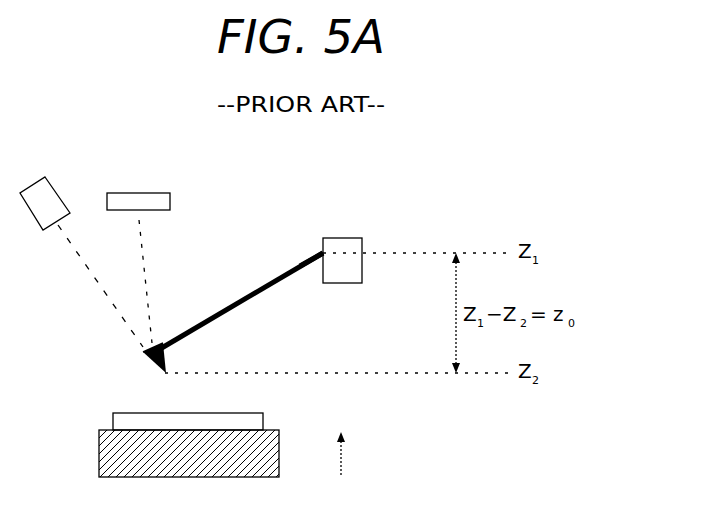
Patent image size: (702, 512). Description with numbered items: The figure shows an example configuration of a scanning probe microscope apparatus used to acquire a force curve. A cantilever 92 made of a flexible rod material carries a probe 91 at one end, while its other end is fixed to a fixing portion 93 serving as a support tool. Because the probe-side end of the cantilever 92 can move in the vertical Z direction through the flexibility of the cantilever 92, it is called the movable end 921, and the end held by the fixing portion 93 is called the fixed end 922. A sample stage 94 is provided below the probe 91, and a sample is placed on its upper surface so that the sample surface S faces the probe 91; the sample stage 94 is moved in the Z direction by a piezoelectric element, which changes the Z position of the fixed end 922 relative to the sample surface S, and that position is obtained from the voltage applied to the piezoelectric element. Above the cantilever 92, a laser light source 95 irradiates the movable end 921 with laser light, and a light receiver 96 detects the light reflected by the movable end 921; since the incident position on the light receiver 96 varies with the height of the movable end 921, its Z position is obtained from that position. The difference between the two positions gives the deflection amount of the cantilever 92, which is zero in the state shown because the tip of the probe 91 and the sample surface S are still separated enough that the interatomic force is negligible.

The probe 91 is at (148, 363).
The cantilever 92 is at (250, 290).
The movable end 921 is at (147, 352).
The fixed end 922 is at (322, 253).
The fixing portion 93 is at (337, 247).
The sample stage 94 is at (282, 442).
The laser light source 95 is at (43, 207).
The light receiver 96 is at (163, 193).
The sample surface S is at (247, 413).